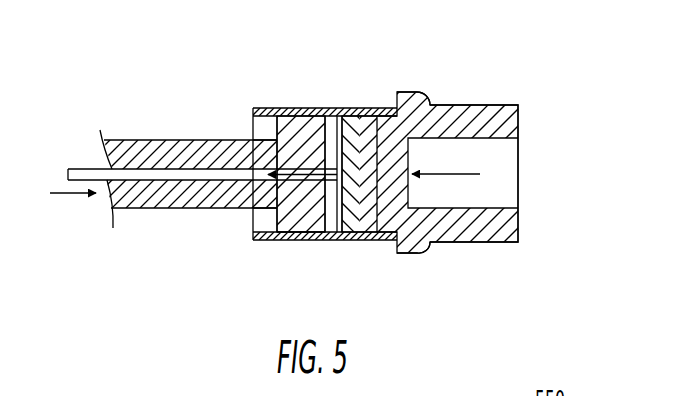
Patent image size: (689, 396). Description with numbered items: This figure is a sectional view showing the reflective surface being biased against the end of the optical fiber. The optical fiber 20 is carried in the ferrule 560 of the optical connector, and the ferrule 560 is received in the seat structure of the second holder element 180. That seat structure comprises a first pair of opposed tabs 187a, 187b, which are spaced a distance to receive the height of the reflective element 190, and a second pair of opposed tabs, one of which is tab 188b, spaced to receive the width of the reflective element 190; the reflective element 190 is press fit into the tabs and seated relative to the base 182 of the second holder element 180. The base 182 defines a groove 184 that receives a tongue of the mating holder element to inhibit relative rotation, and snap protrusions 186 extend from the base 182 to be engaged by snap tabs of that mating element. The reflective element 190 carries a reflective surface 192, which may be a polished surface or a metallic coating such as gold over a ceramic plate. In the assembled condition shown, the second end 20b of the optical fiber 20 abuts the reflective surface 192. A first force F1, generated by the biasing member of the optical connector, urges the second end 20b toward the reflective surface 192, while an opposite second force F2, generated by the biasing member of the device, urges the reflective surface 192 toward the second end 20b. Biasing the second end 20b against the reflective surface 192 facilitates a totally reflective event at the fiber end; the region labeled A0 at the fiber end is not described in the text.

The optical fiber 20 is at (87, 150).
The second end of the optical fiber 20b is at (348, 168).
The ferrule 560 is at (280, 115).
The opposed tab of the second pair 188b is at (250, 127).
The opposed tab of the first pair 187a is at (295, 115).
The opposed tab of the first pair 187b is at (313, 242).
The air gap A0 is at (331, 197).
The reflective surface 192 is at (321, 242).
The reflective element 190 is at (367, 107).
The second holder element 180 is at (482, 72).
The snap protrusion 186 is at (417, 92).
The base 182 is at (509, 105).
The groove 184 is at (517, 193).
The first force F1 is at (76, 198).
The second force F2 is at (445, 174).